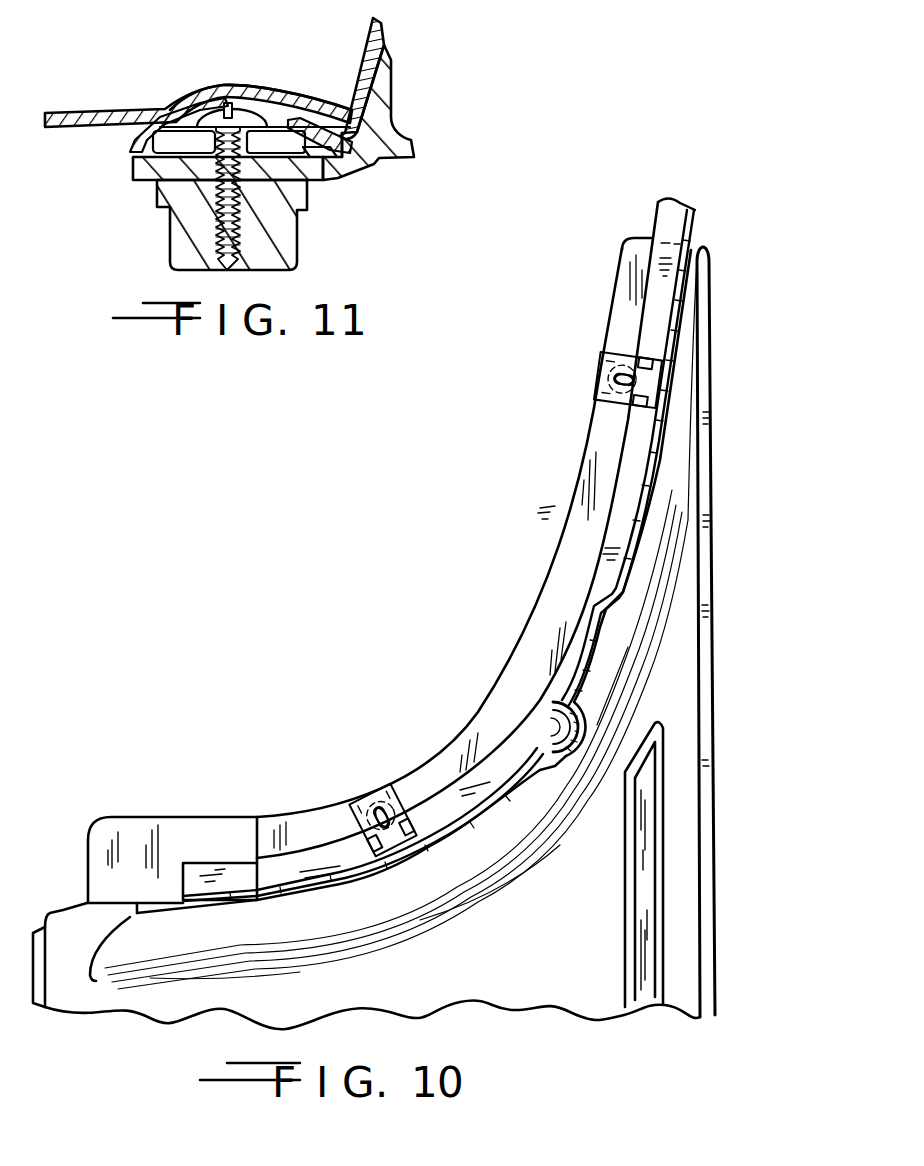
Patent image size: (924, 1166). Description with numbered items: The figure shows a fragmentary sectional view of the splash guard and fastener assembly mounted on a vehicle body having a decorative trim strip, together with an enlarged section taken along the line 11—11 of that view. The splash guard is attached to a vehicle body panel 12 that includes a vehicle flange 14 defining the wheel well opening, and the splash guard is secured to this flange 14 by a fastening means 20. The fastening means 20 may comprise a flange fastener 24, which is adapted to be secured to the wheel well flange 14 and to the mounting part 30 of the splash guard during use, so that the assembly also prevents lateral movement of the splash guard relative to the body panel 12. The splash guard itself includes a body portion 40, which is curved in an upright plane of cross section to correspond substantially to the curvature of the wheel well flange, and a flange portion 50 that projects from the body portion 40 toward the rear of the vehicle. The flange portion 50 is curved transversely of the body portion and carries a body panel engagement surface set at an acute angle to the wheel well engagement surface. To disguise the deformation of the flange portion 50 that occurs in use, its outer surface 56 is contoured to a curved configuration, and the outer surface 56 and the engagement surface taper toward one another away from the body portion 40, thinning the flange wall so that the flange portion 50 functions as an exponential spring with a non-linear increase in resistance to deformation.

In FIG. 11, the vehicle body panel 12 is at (380, 28).
In FIG. 10, the vehicle body panel 12 is at (257, 840).
In FIG. 11, the vehicle flange 14 is at (342, 158).
In FIG. 10, the vehicle flange 14 is at (667, 222).
In FIG. 10, the fastening means 20 is at (580, 400).
In FIG. 11, the flange fastener 24 is at (177, 233).
In FIG. 11, the mounting part 30 is at (148, 170).
In FIG. 10, the mounting part 30 is at (312, 823).
In FIG. 10, the body portion 40 is at (686, 581).
In FIG. 11, the flange portion 50 is at (414, 103).
In FIG. 11, the outer surface 56 is at (385, 84).
In FIG. 10, the section line 11- 11 is at (540, 363).